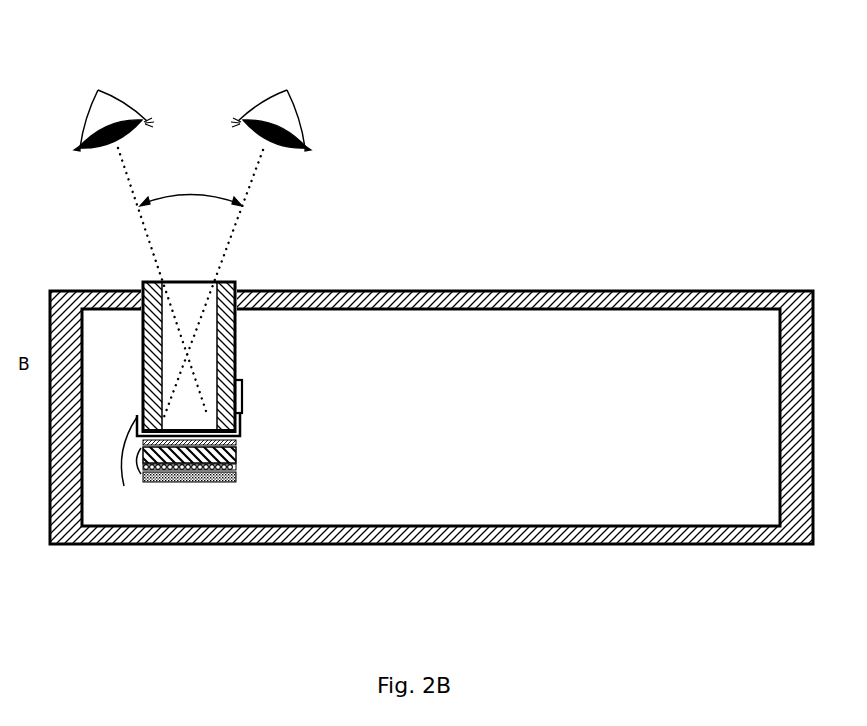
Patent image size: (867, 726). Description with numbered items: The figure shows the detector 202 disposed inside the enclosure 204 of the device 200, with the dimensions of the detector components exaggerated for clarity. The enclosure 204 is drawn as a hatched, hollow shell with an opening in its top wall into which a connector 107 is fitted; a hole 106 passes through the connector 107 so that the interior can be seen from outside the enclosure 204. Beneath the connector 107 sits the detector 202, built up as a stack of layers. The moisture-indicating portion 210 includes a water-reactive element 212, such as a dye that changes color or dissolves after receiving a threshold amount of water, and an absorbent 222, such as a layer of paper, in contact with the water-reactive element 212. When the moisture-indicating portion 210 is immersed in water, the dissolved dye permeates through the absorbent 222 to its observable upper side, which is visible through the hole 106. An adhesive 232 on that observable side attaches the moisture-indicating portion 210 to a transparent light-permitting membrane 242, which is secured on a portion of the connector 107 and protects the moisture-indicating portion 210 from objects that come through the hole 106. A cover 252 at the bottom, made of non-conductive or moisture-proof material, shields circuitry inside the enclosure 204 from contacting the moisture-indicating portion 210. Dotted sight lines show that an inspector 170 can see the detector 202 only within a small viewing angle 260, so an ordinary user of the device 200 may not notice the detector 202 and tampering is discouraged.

The inspector 170 is at (108, 108).
The viewing angle 260 is at (175, 193).
The hole 106 is at (190, 293).
The connector 107 is at (233, 280).
The light-permitting membrane 242 is at (240, 433).
The adhesive 232 is at (237, 443).
The absorbent 222 is at (237, 457).
The water-reactive element 212 is at (237, 468).
The cover 252 is at (225, 482).
The detector 202 is at (122, 452).
The moisture-indicating portion 210 is at (139, 469).
The enclosure 204 is at (627, 533).
The device 200 is at (217, 550).